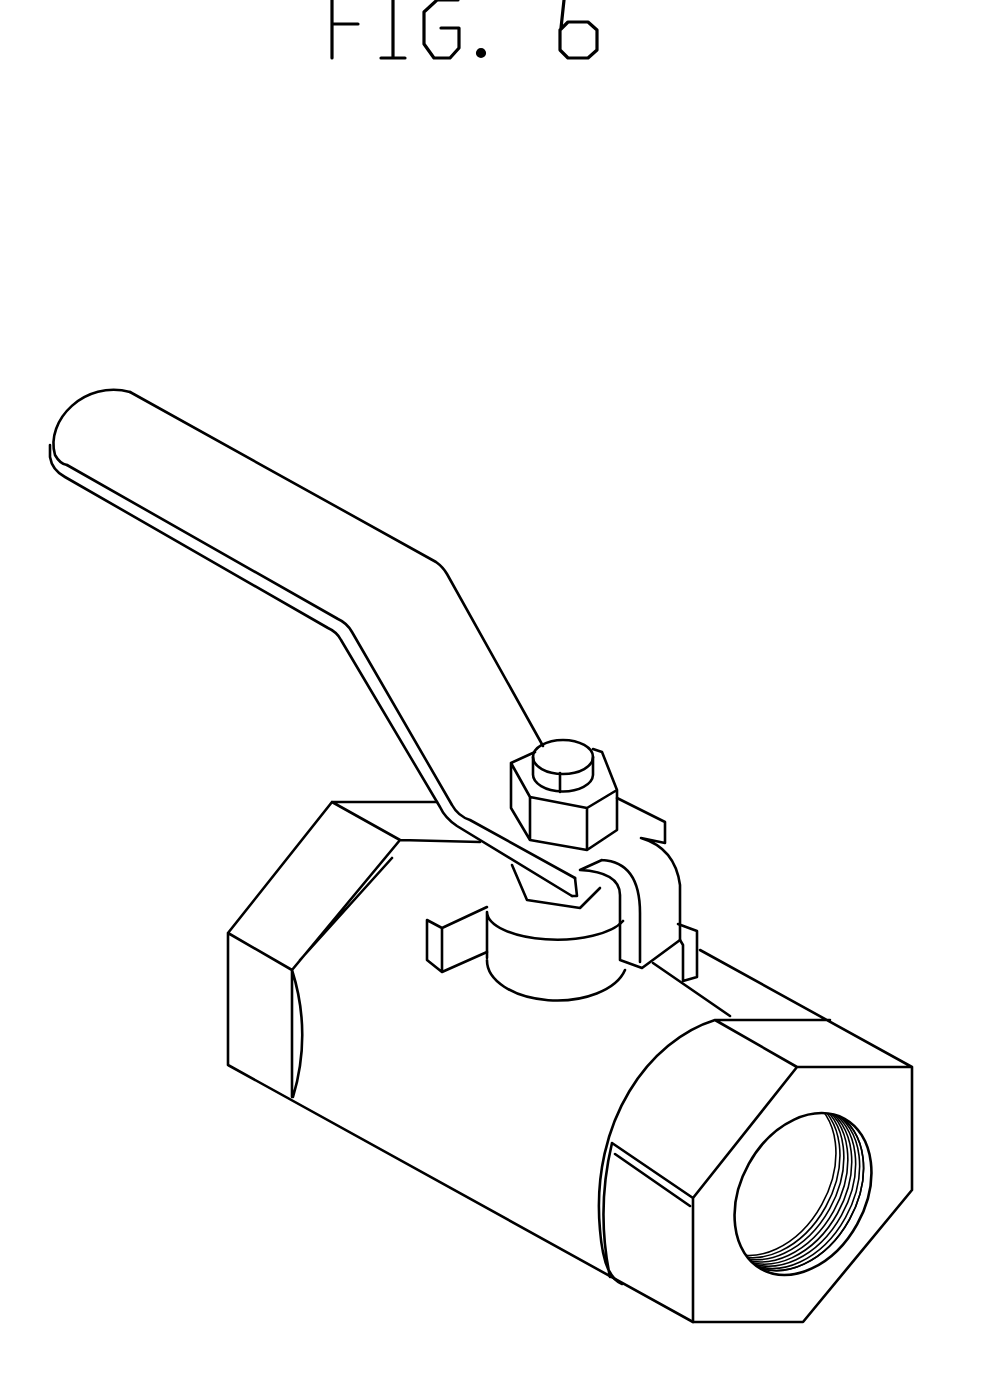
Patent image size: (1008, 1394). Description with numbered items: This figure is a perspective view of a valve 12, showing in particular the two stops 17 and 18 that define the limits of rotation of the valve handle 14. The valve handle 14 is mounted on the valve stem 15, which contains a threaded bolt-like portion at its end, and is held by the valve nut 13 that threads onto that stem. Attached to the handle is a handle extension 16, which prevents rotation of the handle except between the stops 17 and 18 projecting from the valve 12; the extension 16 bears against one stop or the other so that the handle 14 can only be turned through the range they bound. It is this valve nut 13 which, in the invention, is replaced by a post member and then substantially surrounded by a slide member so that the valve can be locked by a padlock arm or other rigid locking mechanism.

The valve 12 is at (484, 1212).
The valve nut 13 is at (617, 766).
The valve handle 14 is at (243, 450).
The valve stem 15 is at (577, 736).
The handle extension 16 is at (663, 904).
The stop 17 is at (459, 932).
The stop 18 is at (692, 941).